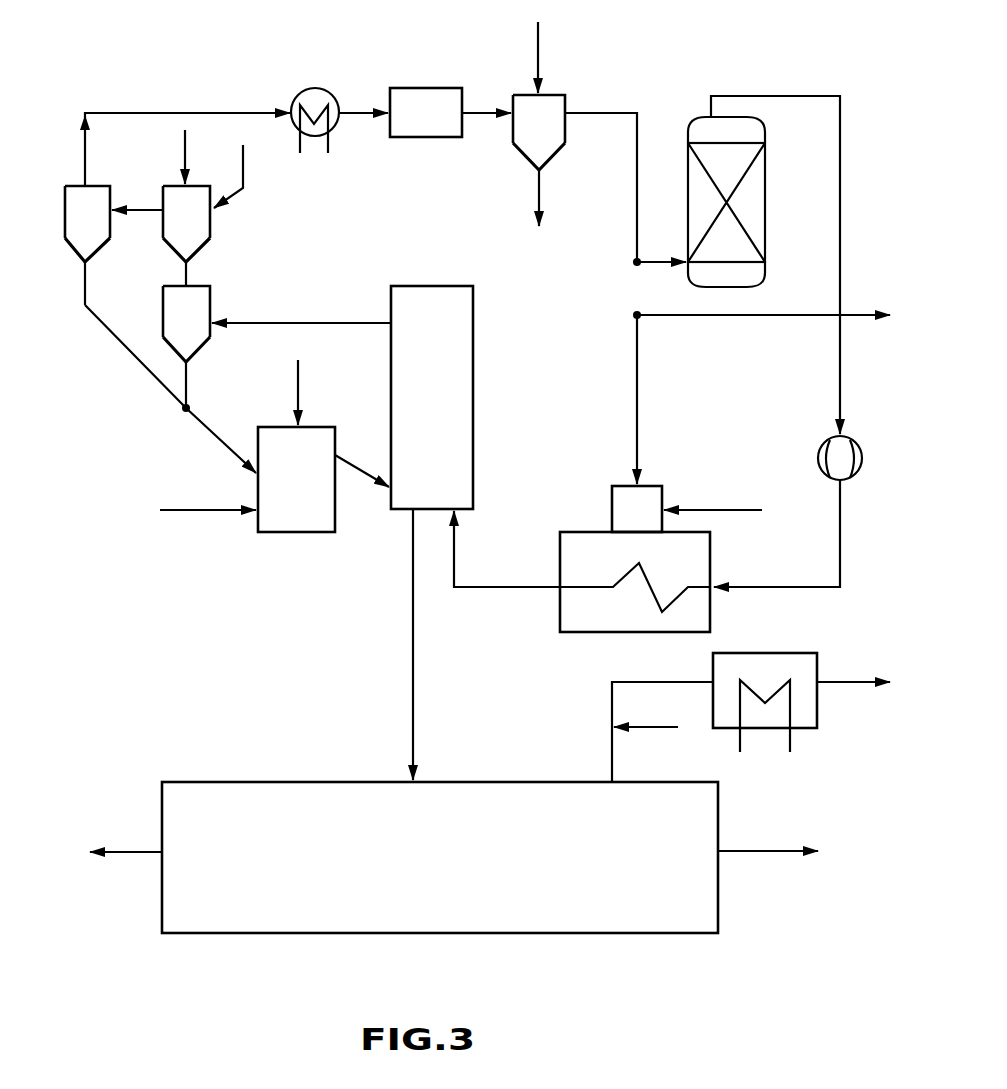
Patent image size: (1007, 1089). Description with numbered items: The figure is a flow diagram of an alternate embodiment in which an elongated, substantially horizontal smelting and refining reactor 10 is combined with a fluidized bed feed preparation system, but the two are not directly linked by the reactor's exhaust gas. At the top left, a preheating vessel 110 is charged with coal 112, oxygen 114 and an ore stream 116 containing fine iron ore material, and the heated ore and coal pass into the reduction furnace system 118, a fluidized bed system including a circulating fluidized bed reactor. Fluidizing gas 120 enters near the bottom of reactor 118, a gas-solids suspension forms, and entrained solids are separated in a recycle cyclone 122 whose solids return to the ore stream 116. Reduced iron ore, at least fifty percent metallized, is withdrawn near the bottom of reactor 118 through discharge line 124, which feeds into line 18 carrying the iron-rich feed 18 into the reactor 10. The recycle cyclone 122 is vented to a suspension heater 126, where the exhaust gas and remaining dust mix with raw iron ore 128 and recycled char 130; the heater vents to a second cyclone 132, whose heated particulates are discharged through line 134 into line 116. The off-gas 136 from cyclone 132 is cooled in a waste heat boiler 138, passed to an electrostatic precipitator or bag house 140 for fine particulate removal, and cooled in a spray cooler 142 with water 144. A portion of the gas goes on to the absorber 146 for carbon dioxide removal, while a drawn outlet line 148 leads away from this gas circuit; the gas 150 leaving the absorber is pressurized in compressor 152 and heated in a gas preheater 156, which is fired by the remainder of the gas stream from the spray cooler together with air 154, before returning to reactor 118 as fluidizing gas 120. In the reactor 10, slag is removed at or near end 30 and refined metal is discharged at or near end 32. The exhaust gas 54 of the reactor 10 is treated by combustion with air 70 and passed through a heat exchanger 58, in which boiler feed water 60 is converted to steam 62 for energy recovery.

The reactor 10 is at (440, 875).
The iron-rich feed 18 is at (412, 750).
The end 30 is at (752, 854).
The end 32 is at (126, 862).
The exhaust gas 54 is at (612, 698).
The heat exchanger 58 is at (778, 668).
The boiler feed water 60 is at (740, 746).
The steam 62 is at (792, 742).
The air 70 is at (650, 727).
The preheating vessel 110 is at (322, 488).
The coal 112 is at (302, 390).
The oxygen 114 is at (194, 512).
The ore stream 116 is at (212, 436).
The reduction furnace system 118 is at (456, 398).
The fluidizing gas 120 is at (498, 590).
The discharge line 124 is at (408, 556).
The recycle cyclone 122 is at (200, 300).
The suspension heater 126 is at (212, 226).
The raw iron ore 128 is at (182, 154).
The recycled char 130 is at (246, 176).
The second cyclone 132 is at (64, 188).
The line 134 is at (83, 276).
The off-gas 136 is at (173, 112).
The waste heat boiler 138 is at (306, 96).
The electrostatic precipitator or bag house 140 is at (450, 128).
The spray cooler 142 is at (549, 115).
The water 144 is at (536, 48).
The absorber 146 is at (703, 128).
The outlet line 148 is at (722, 318).
The gas 150 is at (803, 95).
The compressor 152 is at (829, 441).
The air 154 is at (718, 510).
The gas preheater 156 is at (575, 540).